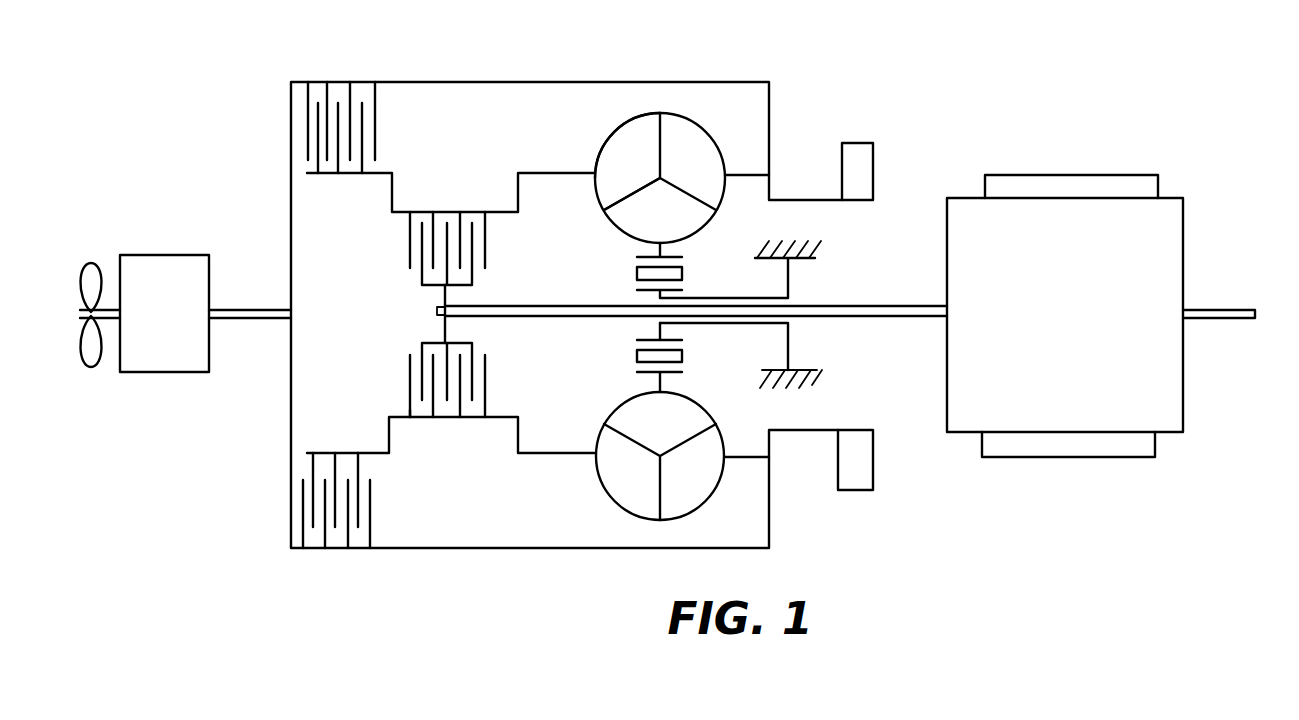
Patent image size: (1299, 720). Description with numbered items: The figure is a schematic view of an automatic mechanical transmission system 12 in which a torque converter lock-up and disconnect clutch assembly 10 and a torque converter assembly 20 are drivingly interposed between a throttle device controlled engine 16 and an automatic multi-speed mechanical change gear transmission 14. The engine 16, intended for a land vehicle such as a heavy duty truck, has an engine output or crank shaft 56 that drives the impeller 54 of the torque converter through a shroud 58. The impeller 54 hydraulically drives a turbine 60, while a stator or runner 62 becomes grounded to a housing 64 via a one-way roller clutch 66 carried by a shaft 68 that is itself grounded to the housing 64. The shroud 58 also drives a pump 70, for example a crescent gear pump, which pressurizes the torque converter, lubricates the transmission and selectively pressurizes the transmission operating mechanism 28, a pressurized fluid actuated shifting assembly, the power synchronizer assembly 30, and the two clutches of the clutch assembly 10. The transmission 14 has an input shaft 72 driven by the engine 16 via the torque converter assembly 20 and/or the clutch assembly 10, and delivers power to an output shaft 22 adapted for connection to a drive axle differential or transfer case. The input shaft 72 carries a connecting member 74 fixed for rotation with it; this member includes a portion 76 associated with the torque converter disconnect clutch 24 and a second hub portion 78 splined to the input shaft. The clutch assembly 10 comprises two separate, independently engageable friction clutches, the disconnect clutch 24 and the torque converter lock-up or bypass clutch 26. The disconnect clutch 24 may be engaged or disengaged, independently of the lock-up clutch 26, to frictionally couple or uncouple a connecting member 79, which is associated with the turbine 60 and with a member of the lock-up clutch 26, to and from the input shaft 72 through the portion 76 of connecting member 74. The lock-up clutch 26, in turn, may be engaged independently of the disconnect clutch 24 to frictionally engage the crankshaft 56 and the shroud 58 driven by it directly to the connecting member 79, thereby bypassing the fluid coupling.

The torque converter lock-up and disconnect clutch assembly 10 is at (566, 275).
The automatic mechanical transmission system 12 is at (932, 101).
The automatic multi-speed mechanical change gear transmission 14 is at (1173, 263).
The throttle device controlled engine 16 is at (177, 265).
The torque converter assembly 20 is at (566, 275).
The output shaft 22 is at (1245, 313).
The torque converter disconnect clutch 24 is at (470, 204).
The torque converter lock-up clutch 26 is at (378, 526).
The transmission operating mechanism 28 is at (1058, 183).
The power synchronizer assembly 30 is at (1067, 445).
The impeller 54 is at (697, 150).
The engine output or crank shaft 56 is at (251, 310).
The shroud 58 is at (513, 83).
The turbine 60 is at (610, 163).
The stator or runner 62 is at (627, 217).
The housing 64 is at (818, 252).
The one-way roller clutch 66 is at (635, 353).
The shaft 68 is at (713, 326).
The pump 70 is at (867, 165).
The transmission input shaft 72 is at (860, 318).
The connecting member 74 is at (426, 323).
The portion of connecting member 76 is at (460, 345).
The hub portion 78 is at (447, 297).
The connecting member 79 is at (420, 418).